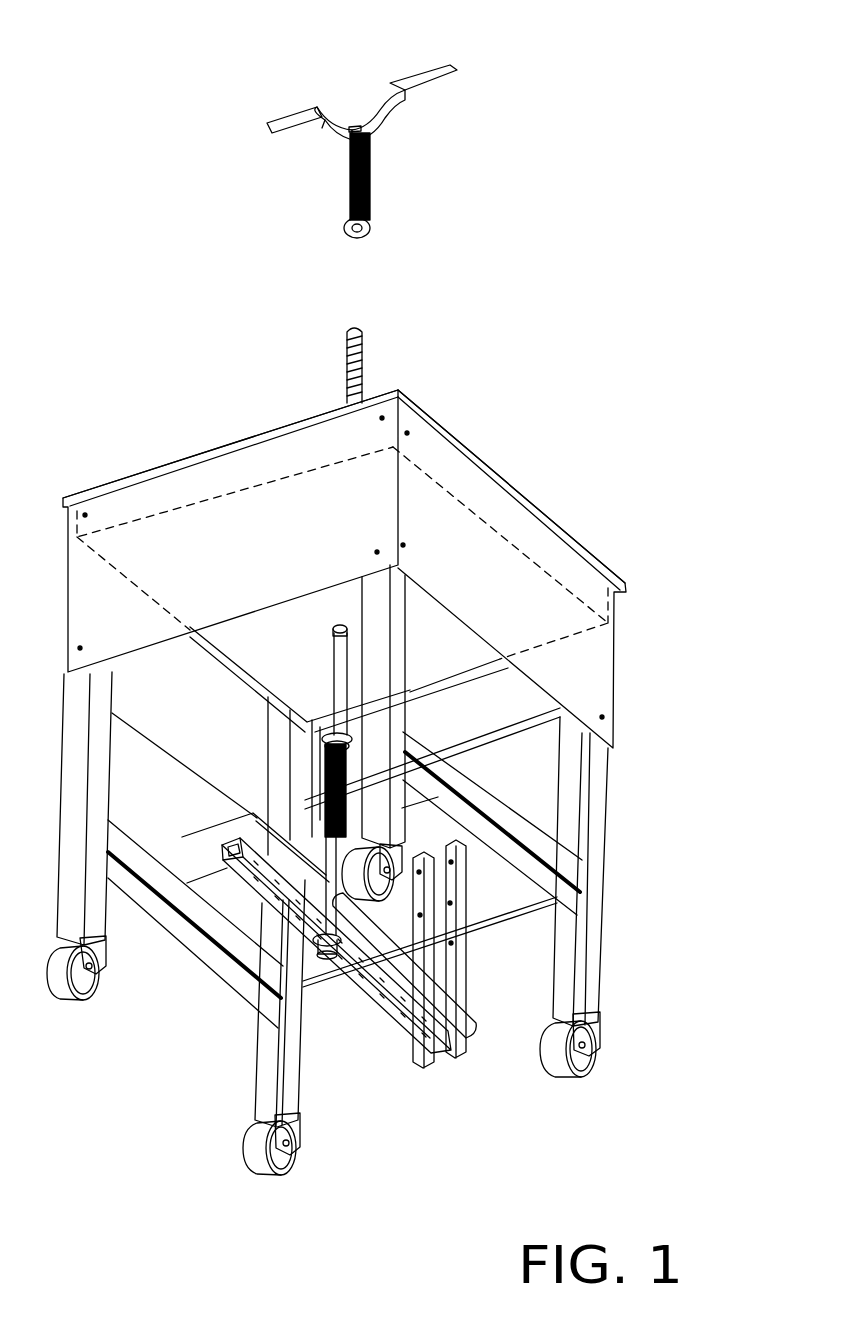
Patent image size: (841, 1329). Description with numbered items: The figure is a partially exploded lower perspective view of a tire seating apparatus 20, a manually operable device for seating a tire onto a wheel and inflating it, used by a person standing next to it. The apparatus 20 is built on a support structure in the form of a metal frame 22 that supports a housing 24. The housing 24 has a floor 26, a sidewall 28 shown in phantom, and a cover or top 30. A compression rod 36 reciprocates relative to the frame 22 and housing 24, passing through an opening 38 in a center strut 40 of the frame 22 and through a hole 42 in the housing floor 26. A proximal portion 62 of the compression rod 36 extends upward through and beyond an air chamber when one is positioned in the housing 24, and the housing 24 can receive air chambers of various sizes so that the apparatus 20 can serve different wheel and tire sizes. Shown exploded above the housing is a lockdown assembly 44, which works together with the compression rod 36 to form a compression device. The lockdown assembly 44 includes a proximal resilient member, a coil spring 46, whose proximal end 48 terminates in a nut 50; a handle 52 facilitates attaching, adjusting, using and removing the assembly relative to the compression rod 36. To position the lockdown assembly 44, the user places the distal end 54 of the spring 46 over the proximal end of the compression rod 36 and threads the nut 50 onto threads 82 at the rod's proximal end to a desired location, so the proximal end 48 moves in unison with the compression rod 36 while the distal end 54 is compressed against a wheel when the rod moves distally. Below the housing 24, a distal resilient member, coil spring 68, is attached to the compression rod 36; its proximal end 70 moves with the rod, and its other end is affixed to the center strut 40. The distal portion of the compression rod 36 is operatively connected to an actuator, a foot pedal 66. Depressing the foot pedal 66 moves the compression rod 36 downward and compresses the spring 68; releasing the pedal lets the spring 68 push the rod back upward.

The tire seating apparatus 20 is at (583, 288).
The frame 22 is at (613, 812).
The housing 24 is at (263, 643).
The floor 26 is at (460, 659).
The sidewall 28 is at (577, 527).
The cover 30 is at (188, 457).
The compression rod 36 is at (342, 395).
The opening 38 is at (300, 820).
The center strut 40 is at (430, 820).
The hole 42 is at (333, 630).
The lockdown assembly 44 is at (278, 178).
The coil spring 46 is at (370, 180).
The proximal end 48 is at (367, 137).
The nut 50 is at (358, 127).
The handle 52 is at (415, 80).
The distal end 54 is at (367, 220).
The proximal portion 62 is at (363, 358).
The foot pedal 66 is at (213, 837).
The coil spring 68 is at (327, 780).
The proximal end 70 is at (380, 727).
The threads 82 is at (347, 355).